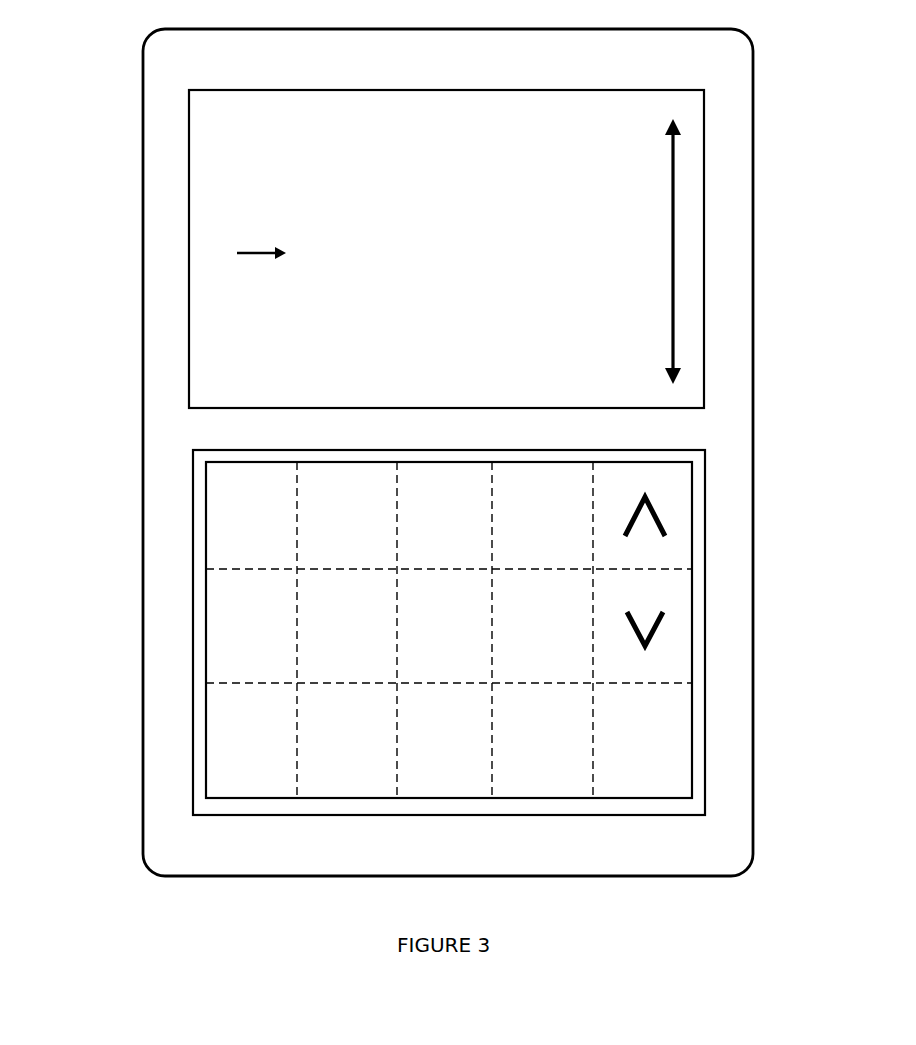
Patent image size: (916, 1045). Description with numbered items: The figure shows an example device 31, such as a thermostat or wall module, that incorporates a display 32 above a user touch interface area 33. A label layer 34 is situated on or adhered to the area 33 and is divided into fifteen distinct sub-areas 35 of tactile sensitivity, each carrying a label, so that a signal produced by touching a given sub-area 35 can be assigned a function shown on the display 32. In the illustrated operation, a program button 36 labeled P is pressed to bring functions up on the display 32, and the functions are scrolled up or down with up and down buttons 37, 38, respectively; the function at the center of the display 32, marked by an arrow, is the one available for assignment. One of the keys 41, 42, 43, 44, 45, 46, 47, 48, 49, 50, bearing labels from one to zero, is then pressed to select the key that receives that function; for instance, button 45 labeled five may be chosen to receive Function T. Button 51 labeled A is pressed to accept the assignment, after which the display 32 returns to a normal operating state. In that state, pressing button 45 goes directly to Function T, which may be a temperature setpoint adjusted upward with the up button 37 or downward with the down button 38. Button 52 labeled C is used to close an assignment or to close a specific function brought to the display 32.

The device 31 is at (792, 173).
The display 32 is at (557, 90).
The user touch interface area 33 is at (560, 448).
The label layer 34 is at (665, 474).
The sub-area 35 is at (662, 570).
The program button 36 is at (558, 561).
The up button 37 is at (643, 565).
The down button 38 is at (642, 676).
The button 41 is at (266, 562).
The button 42 is at (360, 564).
The button 43 is at (452, 562).
The button 44 is at (283, 676).
The button 45 is at (358, 676).
The button 46 is at (450, 677).
The button 47 is at (257, 792).
The button 48 is at (358, 788).
The button 49 is at (448, 788).
The button 50 is at (548, 789).
The button 51 is at (552, 678).
The button 52 is at (658, 789).